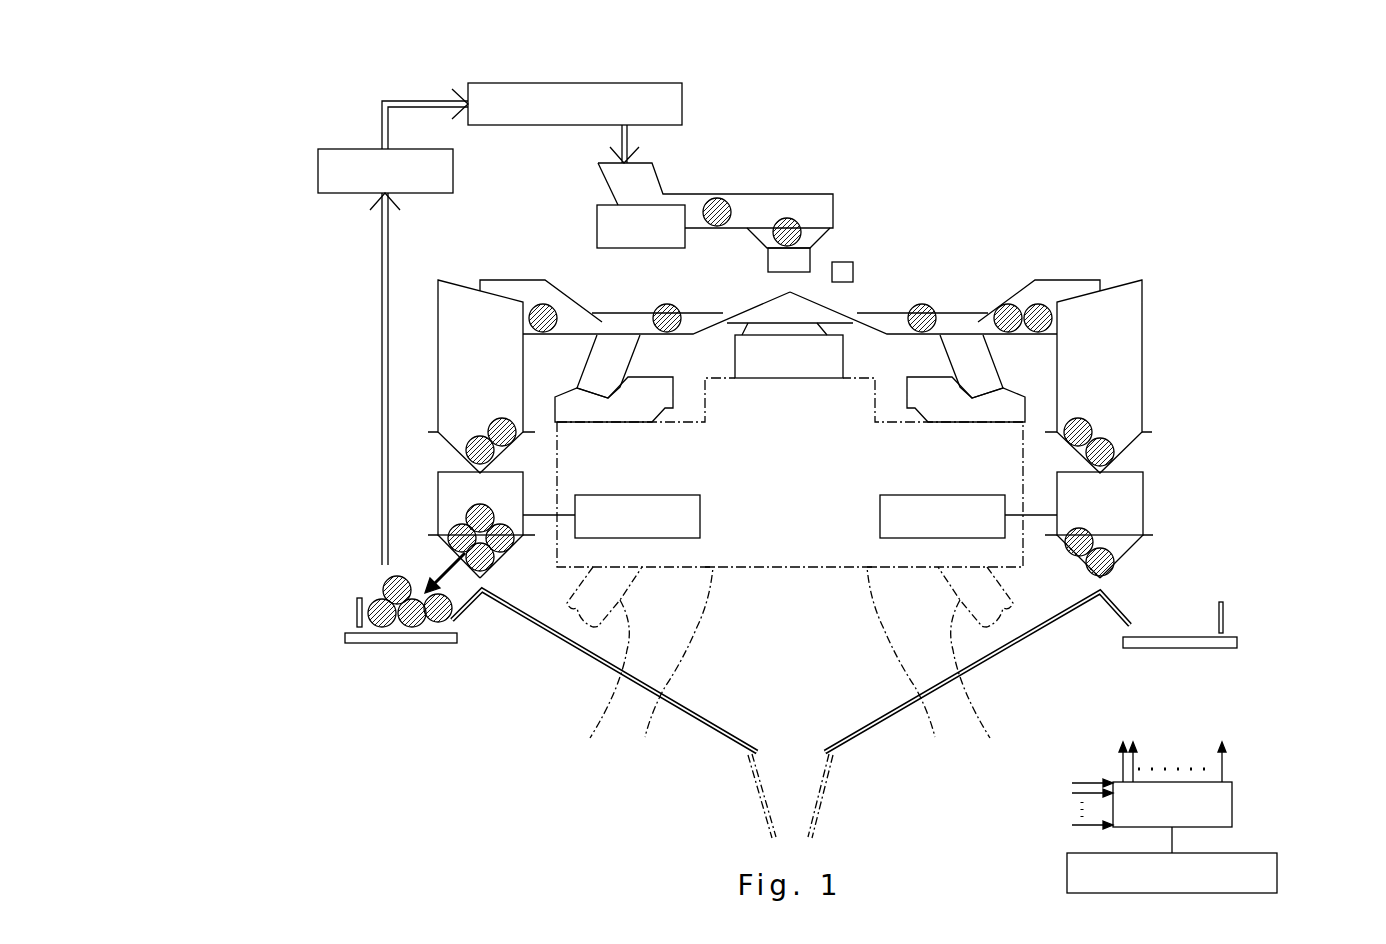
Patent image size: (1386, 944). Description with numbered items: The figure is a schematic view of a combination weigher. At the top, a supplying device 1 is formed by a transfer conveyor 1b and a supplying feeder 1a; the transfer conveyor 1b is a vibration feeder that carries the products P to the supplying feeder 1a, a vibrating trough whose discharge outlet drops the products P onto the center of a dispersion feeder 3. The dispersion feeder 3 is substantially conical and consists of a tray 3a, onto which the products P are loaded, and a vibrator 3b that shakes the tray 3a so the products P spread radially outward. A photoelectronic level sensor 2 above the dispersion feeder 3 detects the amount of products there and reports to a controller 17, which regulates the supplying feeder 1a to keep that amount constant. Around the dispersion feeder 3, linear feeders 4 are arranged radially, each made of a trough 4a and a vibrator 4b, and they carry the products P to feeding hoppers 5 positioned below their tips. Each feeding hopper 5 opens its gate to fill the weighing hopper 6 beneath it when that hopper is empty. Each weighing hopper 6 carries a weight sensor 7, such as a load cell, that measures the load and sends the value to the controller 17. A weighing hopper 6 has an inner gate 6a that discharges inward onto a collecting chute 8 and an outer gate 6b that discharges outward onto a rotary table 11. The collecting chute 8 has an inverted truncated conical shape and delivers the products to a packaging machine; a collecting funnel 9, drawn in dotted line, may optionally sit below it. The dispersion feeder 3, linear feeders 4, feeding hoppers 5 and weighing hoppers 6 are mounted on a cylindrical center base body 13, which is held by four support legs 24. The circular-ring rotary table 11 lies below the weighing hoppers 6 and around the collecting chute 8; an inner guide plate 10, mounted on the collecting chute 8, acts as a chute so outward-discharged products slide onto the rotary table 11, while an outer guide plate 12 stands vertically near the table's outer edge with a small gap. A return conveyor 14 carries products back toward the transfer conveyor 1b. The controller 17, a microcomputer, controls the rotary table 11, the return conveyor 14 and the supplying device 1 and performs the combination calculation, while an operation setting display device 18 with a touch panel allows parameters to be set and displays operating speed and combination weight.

The supplying device 1 is at (650, 147).
The supplying feeder 1a is at (685, 194).
The transfer conveyor 1b is at (682, 105).
The products P is at (731, 212).
The photoelectronic level sensor 2 is at (853, 275).
The dispersion feeder 3 is at (666, 331).
The tray 3a is at (777, 307).
The vibrator 3b is at (776, 330).
The linear feeder 4 is at (945, 320).
The trough 4a is at (873, 313).
The vibrator 4b is at (930, 375).
The feeding hopper 5 is at (438, 328).
The weighing hopper 6 is at (800, 536).
The inner gate 6a is at (500, 558).
The outer gate 6b is at (457, 558).
The weight sensor 7 is at (643, 495).
The collecting chute 8 is at (922, 700).
The collecting funnel 9 is at (823, 797).
The inner guide plate 10 is at (468, 607).
The rotary table 11 is at (400, 645).
The outer guide plate 12 is at (357, 608).
The center base body 13 is at (784, 675).
The return conveyor 14 is at (318, 170).
The controller 17 is at (1232, 802).
The operation setting display device 18 is at (1277, 875).
The support leg 24 is at (790, 667).